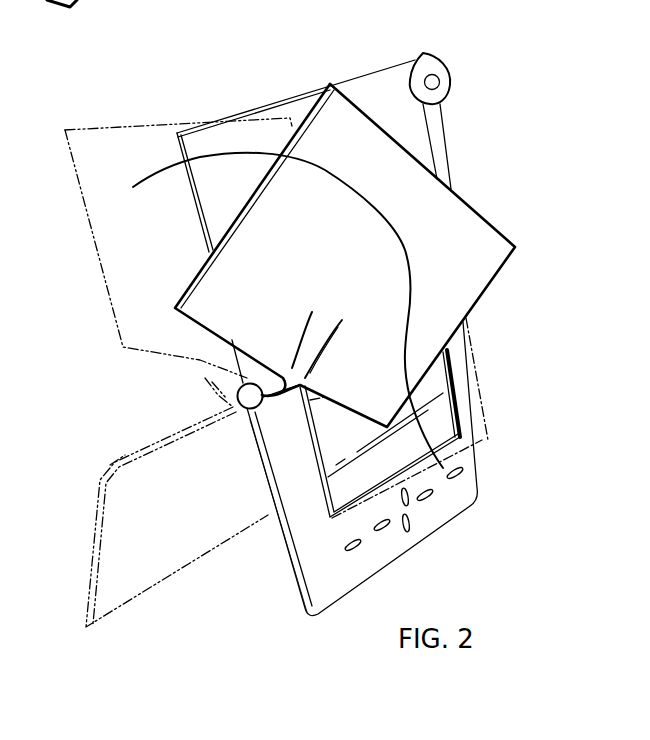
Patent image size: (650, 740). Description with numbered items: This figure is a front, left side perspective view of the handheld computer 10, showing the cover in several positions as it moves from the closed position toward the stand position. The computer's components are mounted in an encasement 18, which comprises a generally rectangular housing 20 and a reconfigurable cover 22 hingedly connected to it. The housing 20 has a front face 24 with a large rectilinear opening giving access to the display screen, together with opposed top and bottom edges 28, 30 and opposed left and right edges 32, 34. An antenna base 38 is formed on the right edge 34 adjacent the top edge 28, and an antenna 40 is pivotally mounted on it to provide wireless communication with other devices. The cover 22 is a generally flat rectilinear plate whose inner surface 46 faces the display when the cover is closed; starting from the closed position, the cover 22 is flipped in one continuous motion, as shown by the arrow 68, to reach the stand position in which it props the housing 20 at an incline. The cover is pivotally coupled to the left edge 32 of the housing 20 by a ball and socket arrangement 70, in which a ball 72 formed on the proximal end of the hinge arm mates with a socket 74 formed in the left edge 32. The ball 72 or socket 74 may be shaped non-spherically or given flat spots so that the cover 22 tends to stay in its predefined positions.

The handheld computer 10 is at (512, 94).
The encasement 18 is at (267, 86).
The housing 20 is at (358, 72).
The reconfigurable cover 22 is at (82, 543).
The front face 24 is at (480, 467).
The top edge 28 is at (240, 112).
The bottom edge 30 is at (450, 520).
The left edge 32 is at (287, 567).
The right edge 34 is at (475, 450).
The antenna base 38 is at (448, 70).
The antenna 40 is at (445, 128).
The inner surface 46 is at (118, 462).
The arrow 68 is at (148, 248).
The ball and socket arrangement 70 is at (182, 406).
The ball 72 is at (250, 382).
The socket 74 is at (205, 378).